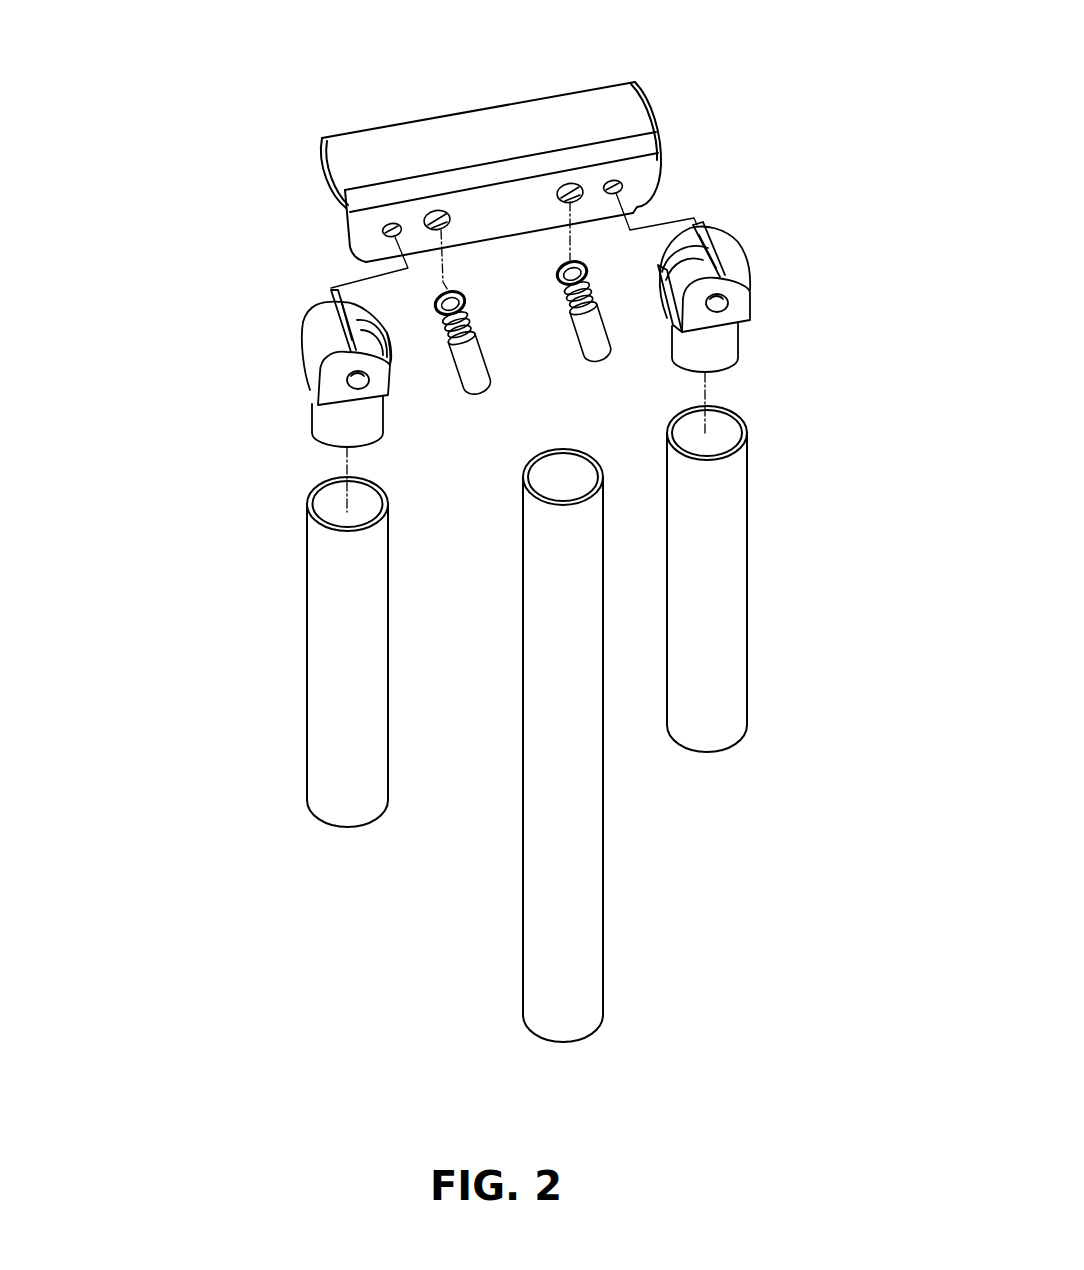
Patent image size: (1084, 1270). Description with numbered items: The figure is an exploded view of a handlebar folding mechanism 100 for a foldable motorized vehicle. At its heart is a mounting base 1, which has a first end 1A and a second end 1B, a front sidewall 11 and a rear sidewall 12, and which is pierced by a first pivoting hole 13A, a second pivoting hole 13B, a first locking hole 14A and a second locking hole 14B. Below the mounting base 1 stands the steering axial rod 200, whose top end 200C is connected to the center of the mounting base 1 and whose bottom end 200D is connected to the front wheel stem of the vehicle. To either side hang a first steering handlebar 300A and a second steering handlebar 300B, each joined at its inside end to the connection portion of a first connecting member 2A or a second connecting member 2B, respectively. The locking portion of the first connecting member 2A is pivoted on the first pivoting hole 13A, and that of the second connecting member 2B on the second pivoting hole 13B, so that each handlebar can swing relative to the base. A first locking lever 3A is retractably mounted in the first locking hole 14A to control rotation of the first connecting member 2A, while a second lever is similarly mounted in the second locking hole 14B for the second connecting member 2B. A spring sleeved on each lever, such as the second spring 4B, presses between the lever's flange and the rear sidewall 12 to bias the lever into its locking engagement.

The handlebar folding mechanism 100 is at (144, 51).
The mounting base 1 is at (433, 142).
The first end 1A is at (343, 160).
The second end 1B is at (622, 98).
The front sidewall 11 is at (510, 212).
The rear sidewall 12 is at (320, 172).
The first pivoting hole 13A is at (388, 223).
The second pivoting hole 13B is at (610, 180).
The first locking hole 14A is at (428, 210).
The second locking hole 14B is at (567, 187).
The first connecting member 2A is at (161, 402).
The second connecting member 2B is at (852, 345).
The first locking lever 3A is at (495, 334).
The second spring 4B is at (603, 299).
The steering axial rod 200 is at (558, 907).
The top end 200C is at (558, 508).
The bottom end 200D is at (550, 998).
The first steering handlebar 300A is at (330, 668).
The second steering handlebar 300B is at (718, 605).